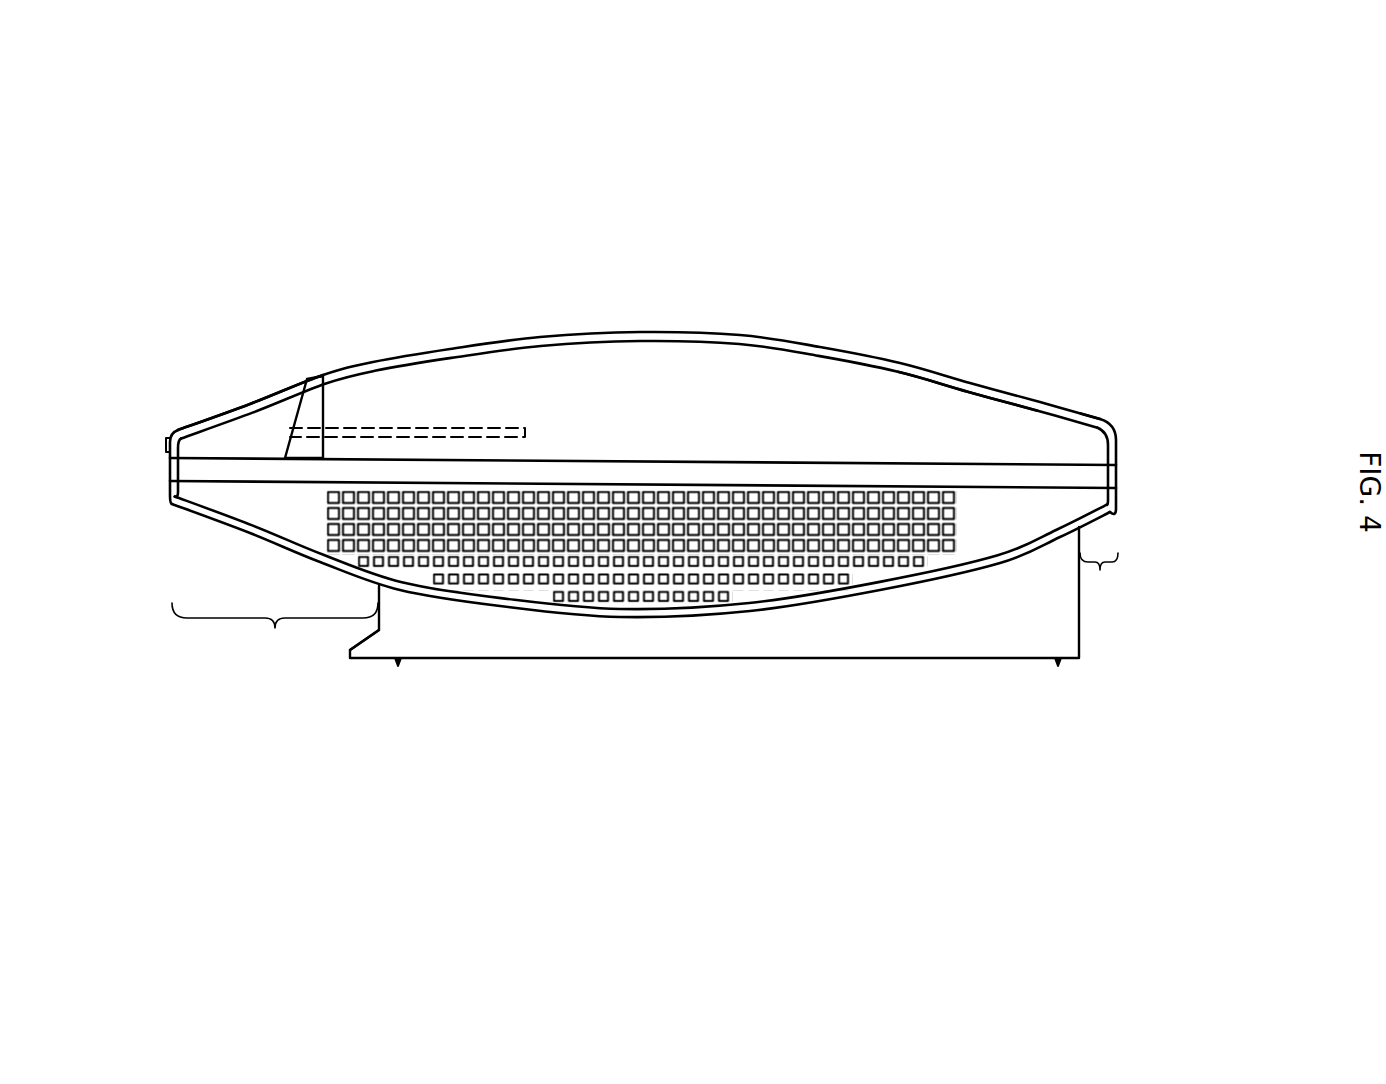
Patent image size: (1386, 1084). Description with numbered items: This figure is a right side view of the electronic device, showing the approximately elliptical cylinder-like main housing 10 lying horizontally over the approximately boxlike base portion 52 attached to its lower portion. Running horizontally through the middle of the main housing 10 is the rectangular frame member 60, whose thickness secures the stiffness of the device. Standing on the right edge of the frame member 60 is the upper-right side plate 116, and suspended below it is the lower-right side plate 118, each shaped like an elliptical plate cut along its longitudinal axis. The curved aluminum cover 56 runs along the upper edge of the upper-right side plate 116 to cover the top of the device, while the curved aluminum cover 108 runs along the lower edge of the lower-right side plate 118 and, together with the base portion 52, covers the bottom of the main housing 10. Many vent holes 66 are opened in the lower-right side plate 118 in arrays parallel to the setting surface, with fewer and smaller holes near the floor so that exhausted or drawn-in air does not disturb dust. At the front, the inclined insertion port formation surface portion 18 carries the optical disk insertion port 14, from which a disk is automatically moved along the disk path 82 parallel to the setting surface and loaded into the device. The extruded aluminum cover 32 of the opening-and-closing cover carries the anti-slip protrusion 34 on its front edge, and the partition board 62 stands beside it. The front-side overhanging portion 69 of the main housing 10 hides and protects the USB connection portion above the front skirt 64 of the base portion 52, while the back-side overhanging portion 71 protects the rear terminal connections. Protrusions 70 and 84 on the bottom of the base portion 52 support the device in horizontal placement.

The main housing 10 is at (1058, 409).
The optical disk insertion port 14 is at (292, 432).
The insertion port formation surface portion 18 is at (313, 378).
The aluminum cover 32 is at (232, 403).
The anti-slip protrusion 34 is at (166, 443).
The base portion 52 is at (1048, 631).
The aluminum cover 56 is at (815, 346).
The frame member 60 is at (172, 468).
The partition board 62 is at (194, 443).
The front skirt 64 is at (368, 637).
The vent holes 66 is at (322, 514).
The front-side overhanging portion 69 is at (275, 635).
The protrusion 70 is at (398, 668).
The back-side overhanging portion 71 is at (1100, 581).
The disk path 82 is at (484, 428).
The protrusion 84 is at (1058, 668).
The aluminum cover 108 is at (1092, 530).
The upper-right side plate 116 is at (933, 414).
The lower-right side plate 118 is at (993, 527).